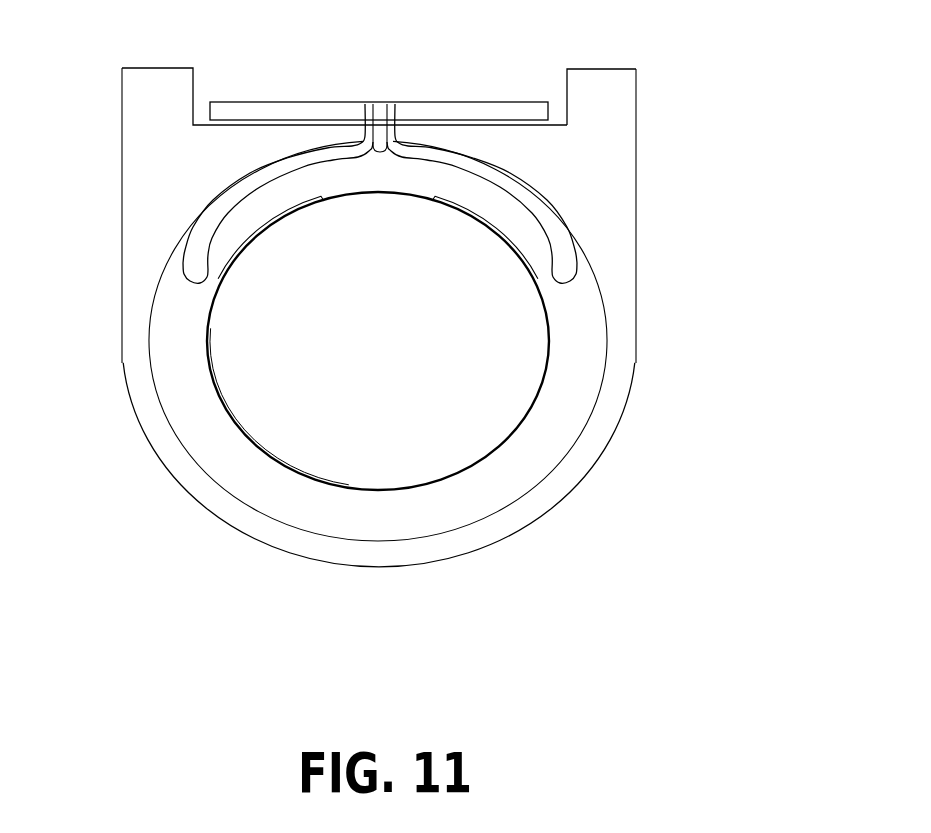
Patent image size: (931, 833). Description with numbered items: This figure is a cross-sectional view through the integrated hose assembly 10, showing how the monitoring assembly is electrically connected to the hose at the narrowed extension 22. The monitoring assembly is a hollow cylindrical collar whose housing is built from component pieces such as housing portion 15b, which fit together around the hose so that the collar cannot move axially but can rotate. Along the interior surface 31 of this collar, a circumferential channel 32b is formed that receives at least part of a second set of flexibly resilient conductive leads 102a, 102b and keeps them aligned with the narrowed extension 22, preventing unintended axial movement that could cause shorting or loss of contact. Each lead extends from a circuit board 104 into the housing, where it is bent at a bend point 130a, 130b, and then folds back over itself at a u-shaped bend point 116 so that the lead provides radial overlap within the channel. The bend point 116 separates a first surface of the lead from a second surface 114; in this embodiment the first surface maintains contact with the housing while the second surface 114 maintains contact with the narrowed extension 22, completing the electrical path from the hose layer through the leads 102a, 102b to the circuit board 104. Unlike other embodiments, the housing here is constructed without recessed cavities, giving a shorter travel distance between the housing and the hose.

The integrated hose assembly 10 is at (690, 583).
The housing portion 15b is at (597, 73).
The narrowed extension 22 is at (523, 417).
The interior surface 31 is at (602, 378).
The channel 32b is at (487, 470).
The flexibly resilient conductive lead 102a is at (270, 222).
The flexibly resilient conductive lead 102b is at (489, 222).
The circuit board 104 is at (507, 100).
The second surface 114 is at (205, 207).
The bend point 116 is at (195, 285).
The bend point 130a is at (360, 147).
The bend point 130b is at (405, 148).